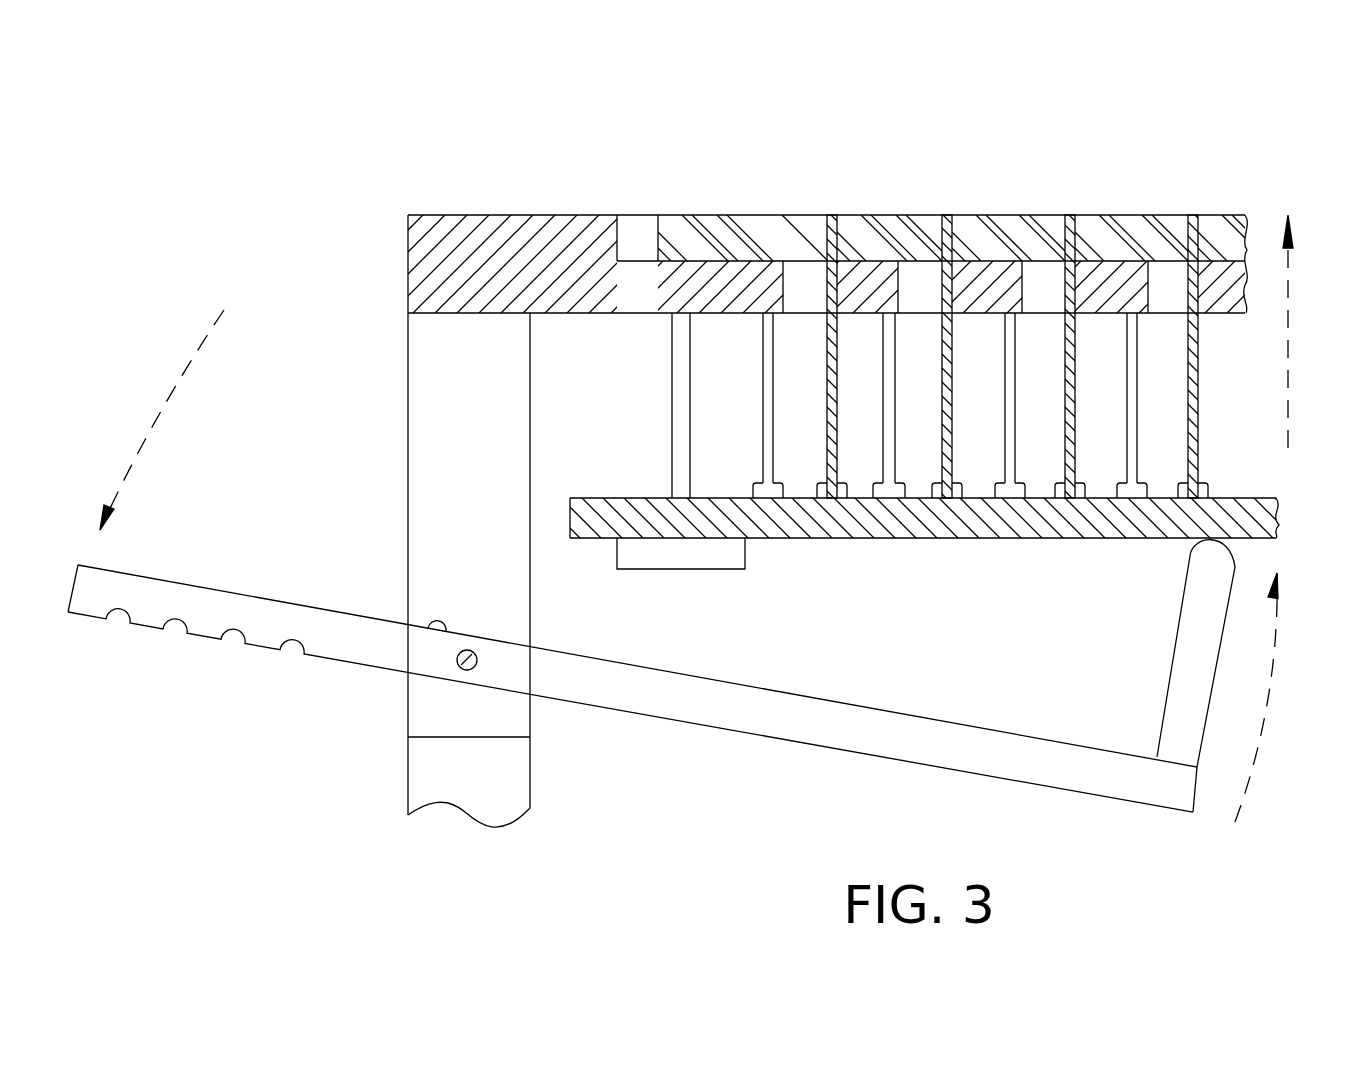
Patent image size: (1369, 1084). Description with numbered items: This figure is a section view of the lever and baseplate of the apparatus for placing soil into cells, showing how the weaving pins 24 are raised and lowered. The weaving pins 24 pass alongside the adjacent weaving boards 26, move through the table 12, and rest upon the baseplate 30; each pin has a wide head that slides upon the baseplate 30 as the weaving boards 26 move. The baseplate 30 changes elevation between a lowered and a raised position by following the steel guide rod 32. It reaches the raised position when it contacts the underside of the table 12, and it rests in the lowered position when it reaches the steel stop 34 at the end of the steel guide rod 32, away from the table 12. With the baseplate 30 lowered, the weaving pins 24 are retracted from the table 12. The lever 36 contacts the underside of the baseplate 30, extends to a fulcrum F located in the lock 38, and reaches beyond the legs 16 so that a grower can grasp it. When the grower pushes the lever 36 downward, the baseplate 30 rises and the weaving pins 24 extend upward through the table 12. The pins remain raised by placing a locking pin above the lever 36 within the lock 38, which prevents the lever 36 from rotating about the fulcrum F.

The table 12 is at (495, 217).
The weaving pins 24 is at (1192, 225).
The weaving boards 26 is at (747, 230).
The baseplate 30 is at (1275, 522).
The steel guide rod 32 is at (680, 423).
The steel stop 34 is at (693, 553).
The lever 36 is at (172, 595).
The lock 38 is at (428, 385).
The legs 16 is at (508, 770).
The fulcrum F is at (460, 668).